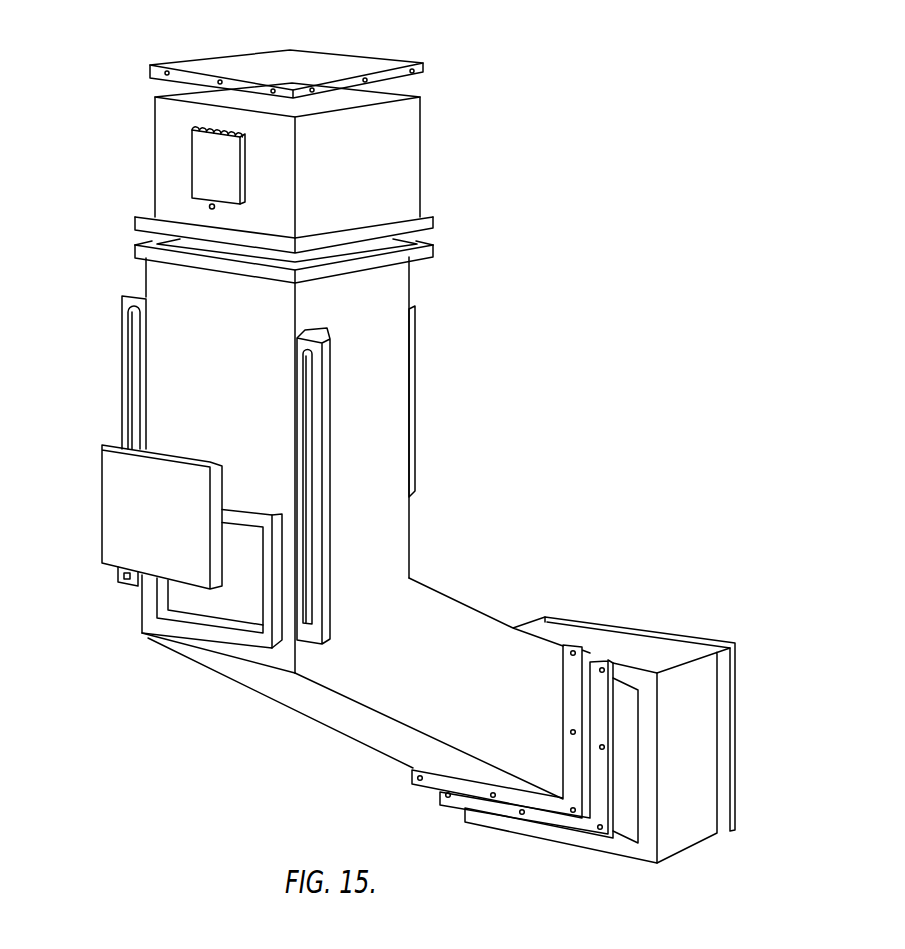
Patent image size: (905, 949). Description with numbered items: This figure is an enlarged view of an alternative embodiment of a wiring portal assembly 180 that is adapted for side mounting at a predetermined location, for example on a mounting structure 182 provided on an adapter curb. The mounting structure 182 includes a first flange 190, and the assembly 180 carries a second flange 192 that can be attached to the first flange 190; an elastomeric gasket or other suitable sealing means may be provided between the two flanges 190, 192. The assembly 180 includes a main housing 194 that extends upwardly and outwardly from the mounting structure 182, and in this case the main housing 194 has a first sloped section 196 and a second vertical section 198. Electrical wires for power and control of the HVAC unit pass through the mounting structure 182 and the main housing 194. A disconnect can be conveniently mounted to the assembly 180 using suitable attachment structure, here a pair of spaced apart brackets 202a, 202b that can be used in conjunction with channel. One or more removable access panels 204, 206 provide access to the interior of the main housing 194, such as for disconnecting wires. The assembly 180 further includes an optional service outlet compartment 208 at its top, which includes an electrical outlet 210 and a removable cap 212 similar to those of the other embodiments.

The wiring portal assembly 180 is at (518, 231).
The mounting structure 182 is at (700, 737).
The first flange 190 is at (602, 783).
The second flange 192 is at (572, 767).
The main housing 194 is at (380, 543).
The first sloped section 196 is at (301, 695).
The second vertical section 198 is at (375, 347).
The bracket 202a is at (122, 349).
The bracket 202b is at (320, 460).
The removable access panel 204 is at (115, 500).
The removable access panel 206 is at (415, 422).
The service outlet compartment 208 is at (418, 146).
The electrical outlet 210 is at (208, 168).
The removable cap 212 is at (251, 62).